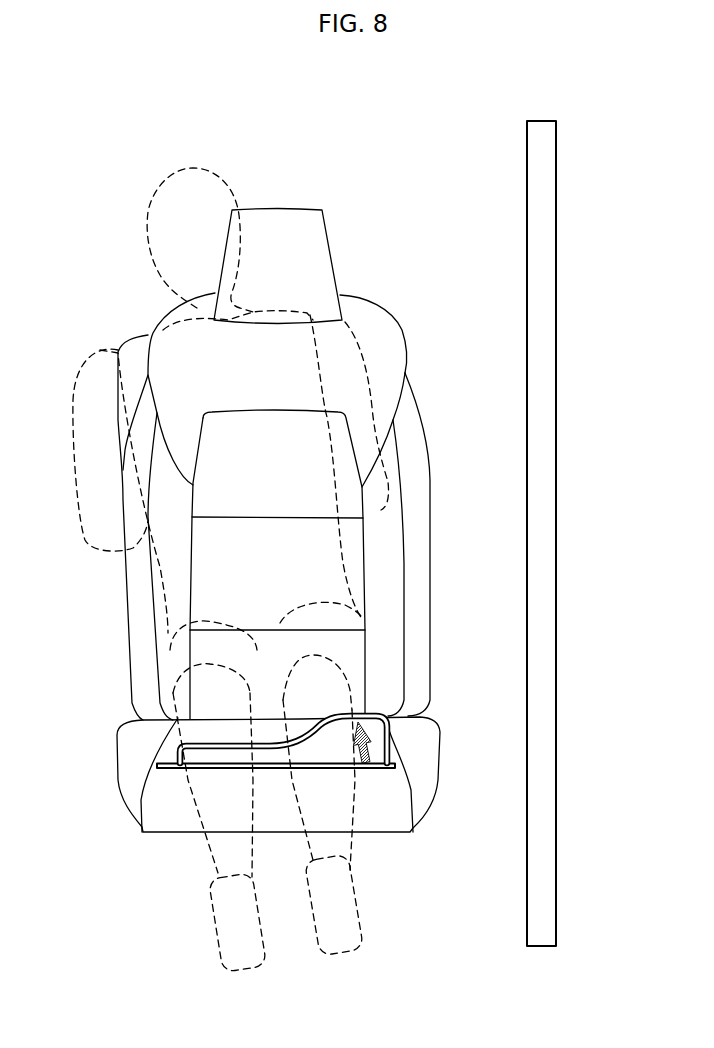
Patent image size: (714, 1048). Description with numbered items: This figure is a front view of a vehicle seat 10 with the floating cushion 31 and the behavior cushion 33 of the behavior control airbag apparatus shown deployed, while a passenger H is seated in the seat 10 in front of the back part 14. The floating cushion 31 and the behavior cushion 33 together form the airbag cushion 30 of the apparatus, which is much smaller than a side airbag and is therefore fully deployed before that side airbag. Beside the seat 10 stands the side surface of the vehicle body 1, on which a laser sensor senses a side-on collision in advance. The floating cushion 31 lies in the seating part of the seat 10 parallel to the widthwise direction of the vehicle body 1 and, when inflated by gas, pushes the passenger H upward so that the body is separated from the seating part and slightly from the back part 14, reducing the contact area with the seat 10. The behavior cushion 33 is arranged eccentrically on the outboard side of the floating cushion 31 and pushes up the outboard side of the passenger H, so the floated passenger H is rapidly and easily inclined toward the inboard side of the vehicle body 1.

The vehicle body 1 is at (556, 235).
The seat 10 is at (441, 378).
The back part 14 is at (377, 493).
The airbag cushion 30 is at (296, 703).
The floating cushion 31 is at (210, 746).
The behavior cushion 33 is at (388, 715).
The passenger H is at (246, 192).